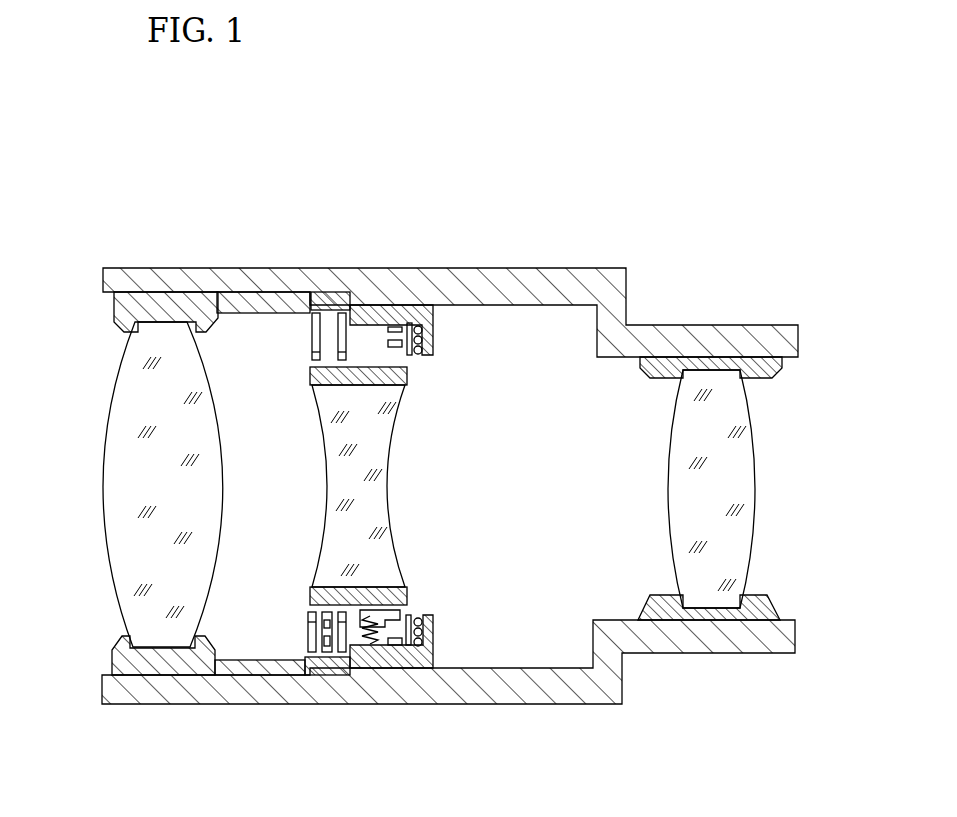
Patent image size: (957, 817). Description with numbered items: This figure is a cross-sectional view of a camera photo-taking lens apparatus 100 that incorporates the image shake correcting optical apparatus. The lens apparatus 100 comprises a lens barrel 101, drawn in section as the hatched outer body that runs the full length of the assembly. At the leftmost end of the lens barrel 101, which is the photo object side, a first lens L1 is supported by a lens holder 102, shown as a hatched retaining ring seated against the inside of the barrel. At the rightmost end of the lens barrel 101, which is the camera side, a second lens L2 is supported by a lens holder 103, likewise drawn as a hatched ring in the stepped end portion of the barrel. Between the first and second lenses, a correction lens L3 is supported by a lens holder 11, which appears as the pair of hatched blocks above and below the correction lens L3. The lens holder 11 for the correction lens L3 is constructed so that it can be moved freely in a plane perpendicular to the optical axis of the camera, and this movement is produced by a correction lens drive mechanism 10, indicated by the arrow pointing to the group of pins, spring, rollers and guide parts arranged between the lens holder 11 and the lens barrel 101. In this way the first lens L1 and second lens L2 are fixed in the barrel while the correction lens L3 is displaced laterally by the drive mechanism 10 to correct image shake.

The lens apparatus 100 is at (597, 228).
The lens barrel 101 is at (462, 268).
The lens holder 102 is at (192, 300).
The lens holder 103 is at (763, 373).
The correction lens drive mechanism 10 is at (424, 606).
The lens holder 11 is at (410, 372).
The first lens L1 is at (130, 395).
The second lens L2 is at (737, 478).
The correction lens L3 is at (383, 448).